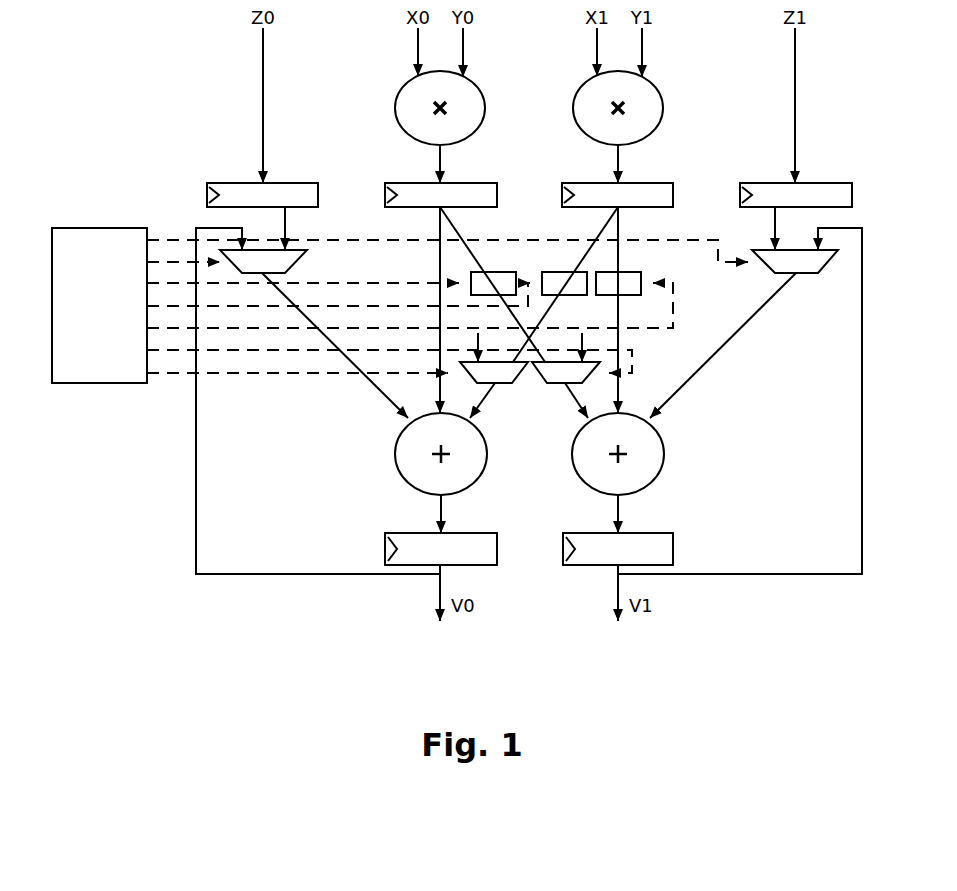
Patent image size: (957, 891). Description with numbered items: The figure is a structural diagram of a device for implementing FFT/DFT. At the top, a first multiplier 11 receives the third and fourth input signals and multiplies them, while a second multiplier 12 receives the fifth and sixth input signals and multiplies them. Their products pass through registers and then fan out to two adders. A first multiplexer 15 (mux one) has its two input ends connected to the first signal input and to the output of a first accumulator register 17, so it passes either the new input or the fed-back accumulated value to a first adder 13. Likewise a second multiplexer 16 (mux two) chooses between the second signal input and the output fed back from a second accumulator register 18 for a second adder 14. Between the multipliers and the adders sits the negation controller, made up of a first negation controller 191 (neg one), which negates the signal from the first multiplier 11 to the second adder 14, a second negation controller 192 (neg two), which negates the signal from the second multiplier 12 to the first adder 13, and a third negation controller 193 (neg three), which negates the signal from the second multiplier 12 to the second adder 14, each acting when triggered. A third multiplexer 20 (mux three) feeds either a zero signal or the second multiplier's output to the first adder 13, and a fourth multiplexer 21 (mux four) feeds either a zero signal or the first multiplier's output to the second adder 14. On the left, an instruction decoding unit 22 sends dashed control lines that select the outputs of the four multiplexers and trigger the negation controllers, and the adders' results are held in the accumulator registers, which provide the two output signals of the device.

The first multiplier 11 is at (425, 108).
The second multiplier 12 is at (631, 108).
The first adder 13 is at (426, 454).
The second adder 14 is at (634, 454).
The first multiplexer 15 is at (314, 334).
The second multiplexer 16 is at (753, 334).
The first accumulator register 17 is at (422, 549).
The second accumulator register 18 is at (638, 549).
The first negation controller 191 is at (494, 272).
The second negation controller 192 is at (562, 272).
The third negation controller 193 is at (636, 272).
The third multiplexer 20 is at (494, 366).
The fourth multiplexer 21 is at (566, 366).
The instruction decoding unit 22 is at (99, 288).